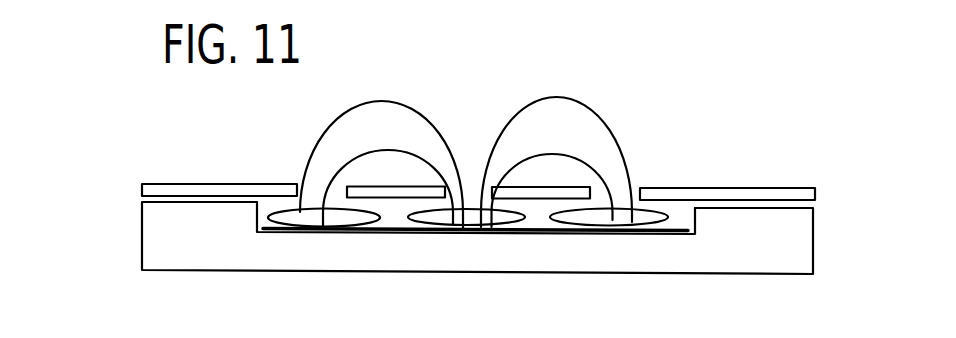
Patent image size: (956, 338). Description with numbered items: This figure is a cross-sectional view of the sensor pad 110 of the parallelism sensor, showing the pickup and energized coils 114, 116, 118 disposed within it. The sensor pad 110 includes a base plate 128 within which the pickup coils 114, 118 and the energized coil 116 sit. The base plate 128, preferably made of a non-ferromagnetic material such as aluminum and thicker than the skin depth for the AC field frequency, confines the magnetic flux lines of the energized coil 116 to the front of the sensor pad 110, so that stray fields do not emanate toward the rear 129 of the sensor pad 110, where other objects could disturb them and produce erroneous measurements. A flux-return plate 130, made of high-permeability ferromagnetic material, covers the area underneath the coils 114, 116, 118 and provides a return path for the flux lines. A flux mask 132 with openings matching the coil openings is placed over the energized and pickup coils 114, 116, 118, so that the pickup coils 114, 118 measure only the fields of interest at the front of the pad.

The sensor pad 110 is at (141, 226).
The pickup coil 114 is at (287, 212).
The energized coil 116 is at (471, 223).
The pickup coil 118 is at (668, 220).
The base plate 128 is at (815, 238).
The rear of the sensor pad 129 is at (488, 300).
The flux-return plate 130 is at (265, 227).
The flux mask 132 is at (772, 188).